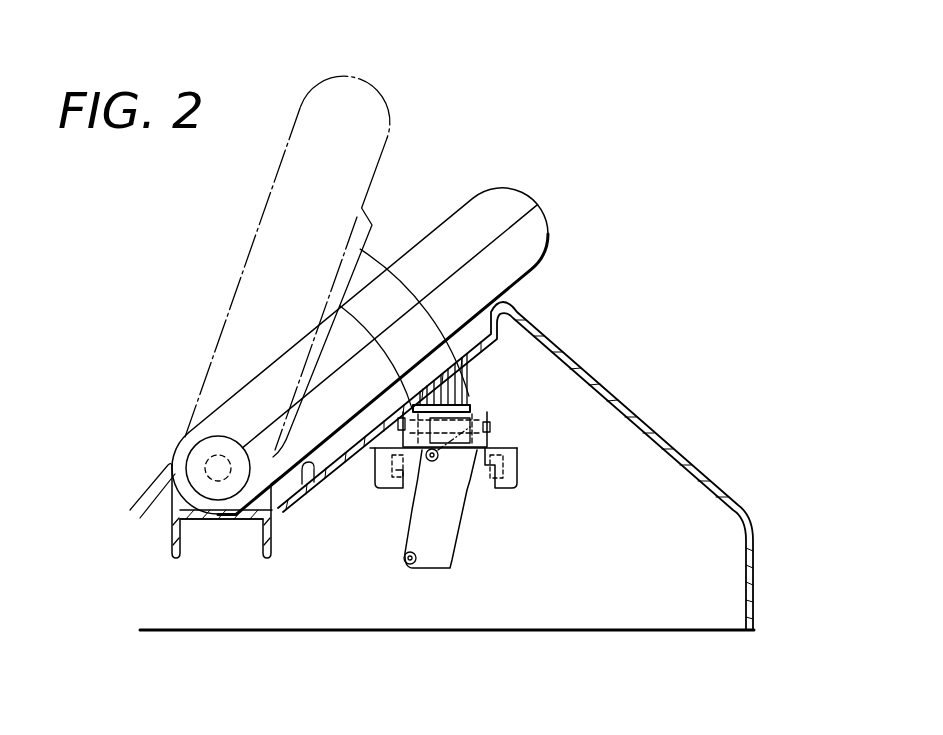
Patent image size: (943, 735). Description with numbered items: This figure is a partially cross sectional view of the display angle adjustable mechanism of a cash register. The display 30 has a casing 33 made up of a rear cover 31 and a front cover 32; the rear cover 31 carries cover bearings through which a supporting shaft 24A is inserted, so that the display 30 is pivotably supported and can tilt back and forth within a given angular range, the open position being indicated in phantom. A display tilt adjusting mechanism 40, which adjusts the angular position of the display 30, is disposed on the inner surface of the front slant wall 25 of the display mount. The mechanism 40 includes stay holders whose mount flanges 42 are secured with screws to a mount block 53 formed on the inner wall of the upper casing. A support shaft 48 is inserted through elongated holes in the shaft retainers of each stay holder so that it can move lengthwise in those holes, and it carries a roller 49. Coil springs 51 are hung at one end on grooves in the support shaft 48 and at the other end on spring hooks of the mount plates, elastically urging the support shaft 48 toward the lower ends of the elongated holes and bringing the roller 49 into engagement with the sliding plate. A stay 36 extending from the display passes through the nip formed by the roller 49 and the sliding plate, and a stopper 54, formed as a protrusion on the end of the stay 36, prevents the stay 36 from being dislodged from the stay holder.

The supporting shaft 24A is at (212, 458).
The front slant wall 25 is at (303, 484).
The display 30 is at (432, 295).
The rear cover 31 is at (430, 364).
The front cover 32 is at (530, 197).
The casing 33 is at (432, 332).
The stay 36 is at (458, 523).
The display tilt adjusting mechanism 40 is at (518, 412).
The mount flange 42 is at (478, 400).
The support shaft 48 is at (492, 414).
The roller 49 is at (424, 456).
The coil spring 51 is at (510, 463).
The mount block 53 is at (462, 392).
The stopper 54 is at (417, 565).